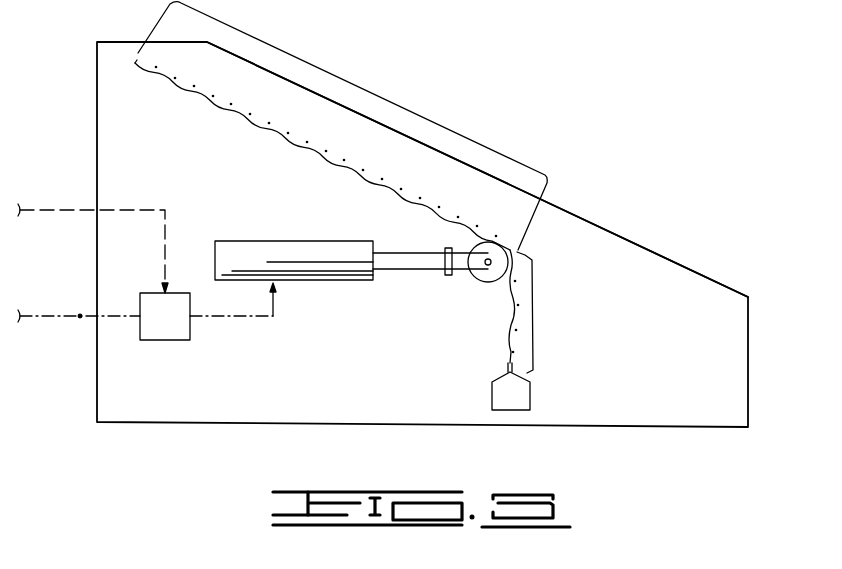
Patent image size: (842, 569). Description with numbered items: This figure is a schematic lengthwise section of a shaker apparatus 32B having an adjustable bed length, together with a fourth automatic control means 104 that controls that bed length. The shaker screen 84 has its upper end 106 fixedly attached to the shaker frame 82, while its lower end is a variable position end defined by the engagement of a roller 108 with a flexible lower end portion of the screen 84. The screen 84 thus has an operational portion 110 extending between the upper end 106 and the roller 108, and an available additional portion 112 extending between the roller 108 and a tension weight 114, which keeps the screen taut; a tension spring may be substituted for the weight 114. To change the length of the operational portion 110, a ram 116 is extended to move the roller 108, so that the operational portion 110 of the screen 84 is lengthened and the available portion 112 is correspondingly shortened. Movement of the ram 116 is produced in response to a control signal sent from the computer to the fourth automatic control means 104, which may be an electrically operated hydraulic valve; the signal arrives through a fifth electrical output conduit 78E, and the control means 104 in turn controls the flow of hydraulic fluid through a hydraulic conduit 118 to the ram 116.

The shaker apparatus 32B is at (183, 399).
The shaker frame 82 is at (636, 243).
The shaker screen 84 is at (260, 130).
The fourth automatic control means 104 is at (180, 328).
The upper end 106 is at (135, 64).
The roller 108 is at (501, 268).
The operational portion 110 is at (366, 85).
The available additional portion 112 is at (535, 332).
The tension weight 114 is at (520, 398).
The ram 116 is at (343, 285).
The hydraulic conduit 118 is at (85, 318).
The fifth electrical output conduit 78E is at (78, 207).